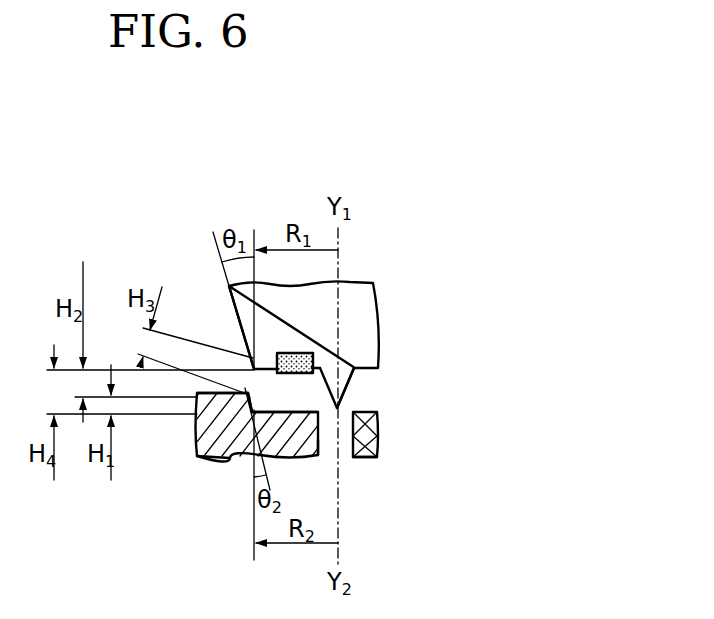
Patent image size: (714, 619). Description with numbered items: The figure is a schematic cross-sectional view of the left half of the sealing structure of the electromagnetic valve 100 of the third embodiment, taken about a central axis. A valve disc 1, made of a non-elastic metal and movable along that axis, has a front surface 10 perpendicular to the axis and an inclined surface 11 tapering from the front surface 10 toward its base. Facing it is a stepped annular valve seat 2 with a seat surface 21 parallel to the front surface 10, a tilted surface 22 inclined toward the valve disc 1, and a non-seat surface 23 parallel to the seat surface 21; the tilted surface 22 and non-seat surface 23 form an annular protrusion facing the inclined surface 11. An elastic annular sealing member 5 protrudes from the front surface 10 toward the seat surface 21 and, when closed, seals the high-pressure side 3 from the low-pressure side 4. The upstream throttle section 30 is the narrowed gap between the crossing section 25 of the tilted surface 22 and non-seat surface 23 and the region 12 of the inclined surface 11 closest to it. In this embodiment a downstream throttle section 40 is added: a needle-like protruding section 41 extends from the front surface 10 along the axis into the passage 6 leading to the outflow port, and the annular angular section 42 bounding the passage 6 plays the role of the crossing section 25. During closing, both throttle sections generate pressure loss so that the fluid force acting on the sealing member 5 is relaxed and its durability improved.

The electromagnetic valve 100 is at (428, 204).
The throttle section 30 is at (147, 214).
The throttle section 40 is at (498, 369).
The valve disc 1 is at (329, 309).
The valve seat 2 is at (319, 456).
The high-pressure side 3 is at (208, 335).
The low-pressure side 4 is at (377, 457).
The sealing member 5 is at (313, 354).
The passage 6 is at (322, 457).
The front surface 10 is at (365, 376).
The inclined surface 11 is at (249, 355).
The region 12 is at (250, 356).
The seat surface 21 is at (305, 411).
The tilted surface 22 is at (236, 455).
The non-seat surface 23 is at (196, 393).
The crossing section 25 is at (198, 457).
The protruding section 41 is at (348, 390).
The annular angular section 42 is at (345, 432).